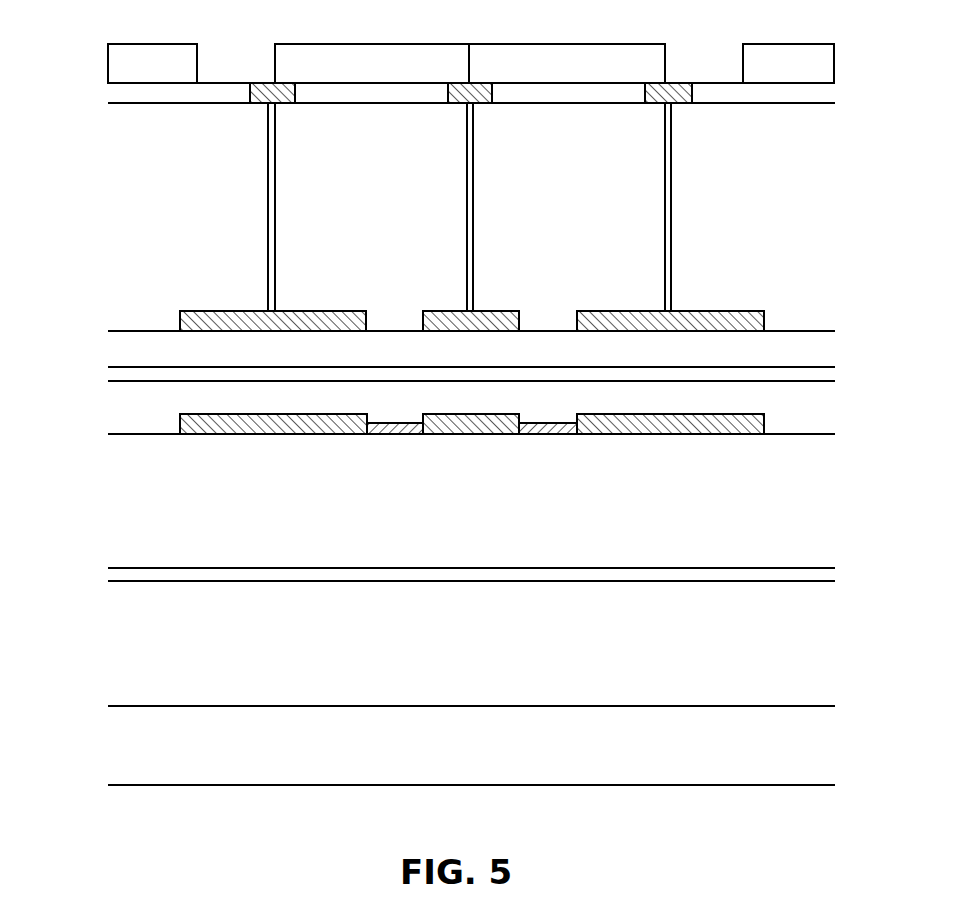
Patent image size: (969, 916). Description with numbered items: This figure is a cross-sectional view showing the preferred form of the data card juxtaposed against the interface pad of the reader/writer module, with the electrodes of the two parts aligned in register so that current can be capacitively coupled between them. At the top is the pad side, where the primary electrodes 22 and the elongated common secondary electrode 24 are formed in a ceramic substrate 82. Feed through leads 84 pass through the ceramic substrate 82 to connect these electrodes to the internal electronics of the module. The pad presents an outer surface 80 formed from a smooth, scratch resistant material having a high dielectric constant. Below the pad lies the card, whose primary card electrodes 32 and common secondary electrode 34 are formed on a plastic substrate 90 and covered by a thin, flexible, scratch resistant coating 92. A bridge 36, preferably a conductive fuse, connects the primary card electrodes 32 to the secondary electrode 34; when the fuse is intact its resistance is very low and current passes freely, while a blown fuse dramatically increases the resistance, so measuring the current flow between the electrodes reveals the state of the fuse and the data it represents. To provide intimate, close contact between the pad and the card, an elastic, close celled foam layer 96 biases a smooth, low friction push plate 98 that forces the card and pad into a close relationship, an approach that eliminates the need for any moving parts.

The ceramic substrate 82 is at (95, 210).
The feed through leads 84 is at (265, 175).
The primary electrodes 22 is at (178, 308).
The secondary electrode 24 is at (523, 308).
The outer surface 80 is at (95, 352).
The coating 92 is at (95, 408).
The primary card electrodes 32 is at (176, 425).
The secondary electrode 34 is at (499, 437).
The bridge 36 is at (375, 436).
The plastic substrate 90 is at (95, 520).
The push plate 98 is at (95, 650).
The foam layer 96 is at (95, 755).